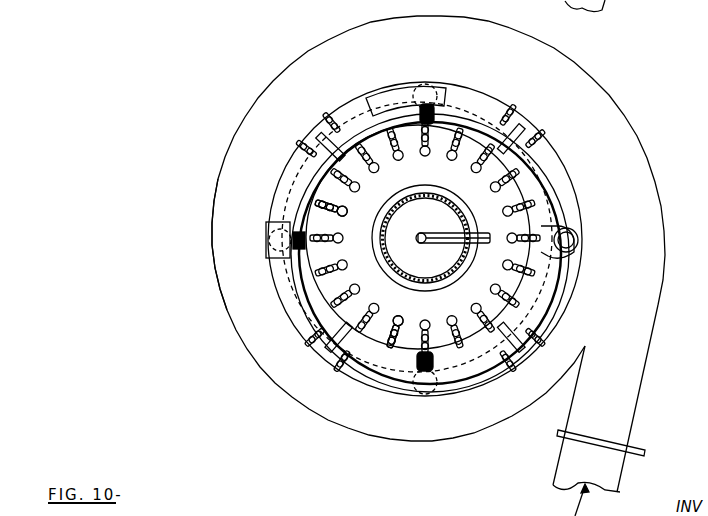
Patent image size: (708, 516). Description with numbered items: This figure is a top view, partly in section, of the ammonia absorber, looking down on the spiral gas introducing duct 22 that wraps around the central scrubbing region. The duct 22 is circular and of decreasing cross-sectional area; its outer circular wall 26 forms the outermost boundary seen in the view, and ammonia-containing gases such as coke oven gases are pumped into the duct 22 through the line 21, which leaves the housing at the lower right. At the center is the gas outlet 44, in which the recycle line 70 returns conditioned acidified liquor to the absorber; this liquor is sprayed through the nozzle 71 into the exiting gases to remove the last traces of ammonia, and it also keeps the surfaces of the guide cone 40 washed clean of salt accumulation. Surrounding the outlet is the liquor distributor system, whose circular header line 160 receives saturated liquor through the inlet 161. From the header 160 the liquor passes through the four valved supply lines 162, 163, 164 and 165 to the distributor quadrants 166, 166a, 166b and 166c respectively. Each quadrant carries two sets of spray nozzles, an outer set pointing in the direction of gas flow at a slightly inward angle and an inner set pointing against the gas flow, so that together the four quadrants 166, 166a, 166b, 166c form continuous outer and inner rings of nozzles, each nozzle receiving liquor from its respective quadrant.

The line 21 is at (626, 479).
The gas introducing duct 22 is at (648, 152).
The outer circular wall 26 is at (216, 291).
The guide cone 40 is at (472, 254).
The gas outlet 44 is at (420, 193).
The recycle line 70 is at (455, 233).
The nozzle 71 is at (418, 243).
The circular header line 160 is at (497, 101).
The inlet 161 is at (566, 229).
The valved supply line 162 is at (553, 258).
The valved supply line 163 is at (448, 106).
The valved supply line 164 is at (298, 230).
The valved supply line 165 is at (424, 352).
The distributor quadrant 166 is at (531, 189).
The distributor quadrant 166a is at (366, 116).
The distributor quadrant 166b is at (312, 258).
The distributor quadrant 166c is at (440, 338).